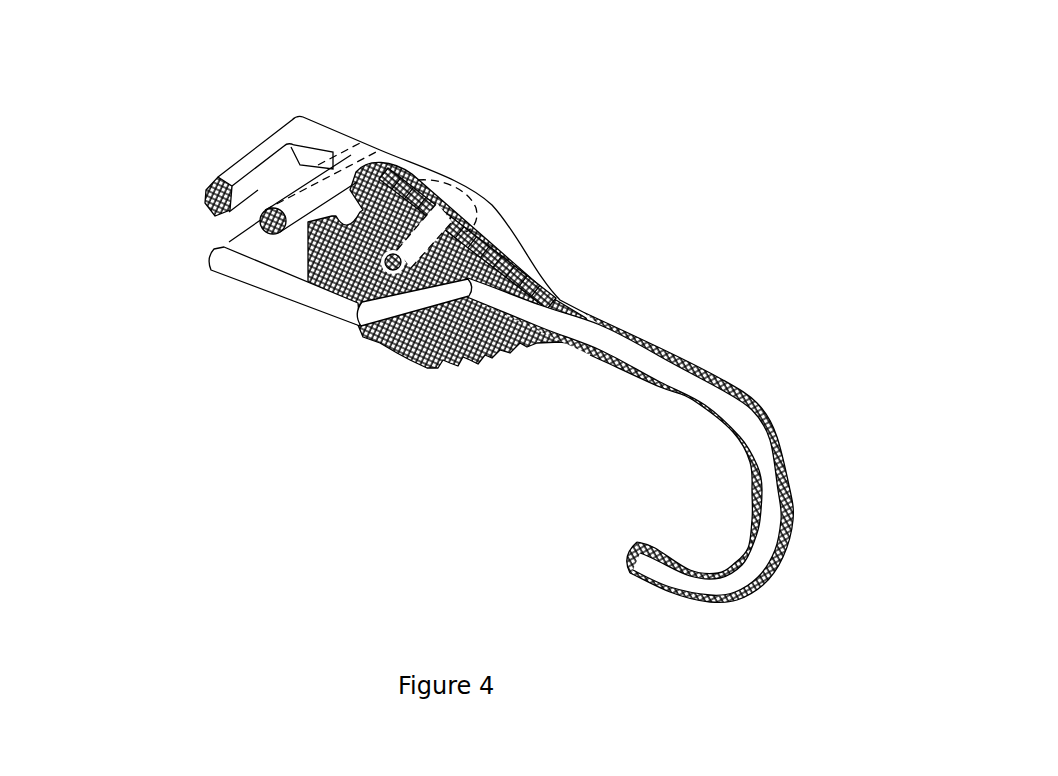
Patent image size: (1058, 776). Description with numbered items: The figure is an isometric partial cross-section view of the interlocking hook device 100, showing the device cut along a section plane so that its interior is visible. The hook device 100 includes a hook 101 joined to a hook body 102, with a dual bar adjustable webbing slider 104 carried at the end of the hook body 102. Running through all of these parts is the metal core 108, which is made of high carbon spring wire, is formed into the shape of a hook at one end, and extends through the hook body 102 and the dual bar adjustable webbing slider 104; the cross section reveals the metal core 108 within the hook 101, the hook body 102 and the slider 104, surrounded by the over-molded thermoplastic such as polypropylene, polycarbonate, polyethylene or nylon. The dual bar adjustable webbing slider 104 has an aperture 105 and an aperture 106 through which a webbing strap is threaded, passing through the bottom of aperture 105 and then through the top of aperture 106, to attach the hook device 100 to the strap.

The interlocking hook device 100 is at (540, 150).
The hook 101 is at (760, 410).
The hook body 102 is at (497, 228).
The dual bar adjustable webbing slider 104 is at (258, 152).
The aperture 105 is at (333, 200).
The aperture 106 is at (286, 178).
The metal core 108 is at (315, 297).